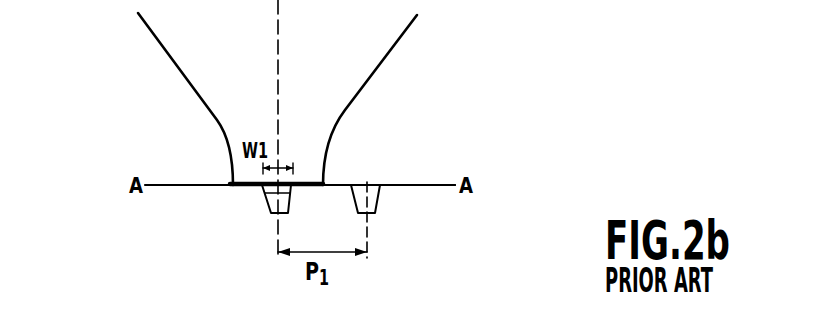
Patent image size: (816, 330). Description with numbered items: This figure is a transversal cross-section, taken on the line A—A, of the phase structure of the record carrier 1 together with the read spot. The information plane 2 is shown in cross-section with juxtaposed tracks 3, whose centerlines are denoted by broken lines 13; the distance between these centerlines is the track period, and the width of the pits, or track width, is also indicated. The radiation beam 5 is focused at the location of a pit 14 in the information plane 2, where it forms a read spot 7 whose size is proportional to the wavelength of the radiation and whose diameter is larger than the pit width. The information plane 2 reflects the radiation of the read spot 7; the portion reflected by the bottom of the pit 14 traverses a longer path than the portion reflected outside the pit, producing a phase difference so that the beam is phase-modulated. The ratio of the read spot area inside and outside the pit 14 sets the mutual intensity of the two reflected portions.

The record carrier 1 is at (540, 198).
The information plane 2 is at (426, 184).
The tracks 3 is at (369, 181).
The radiation beam 5 is at (383, 61).
The read spot 7 is at (316, 183).
The broken lines 13 is at (304, 177).
The pit 14 is at (272, 215).